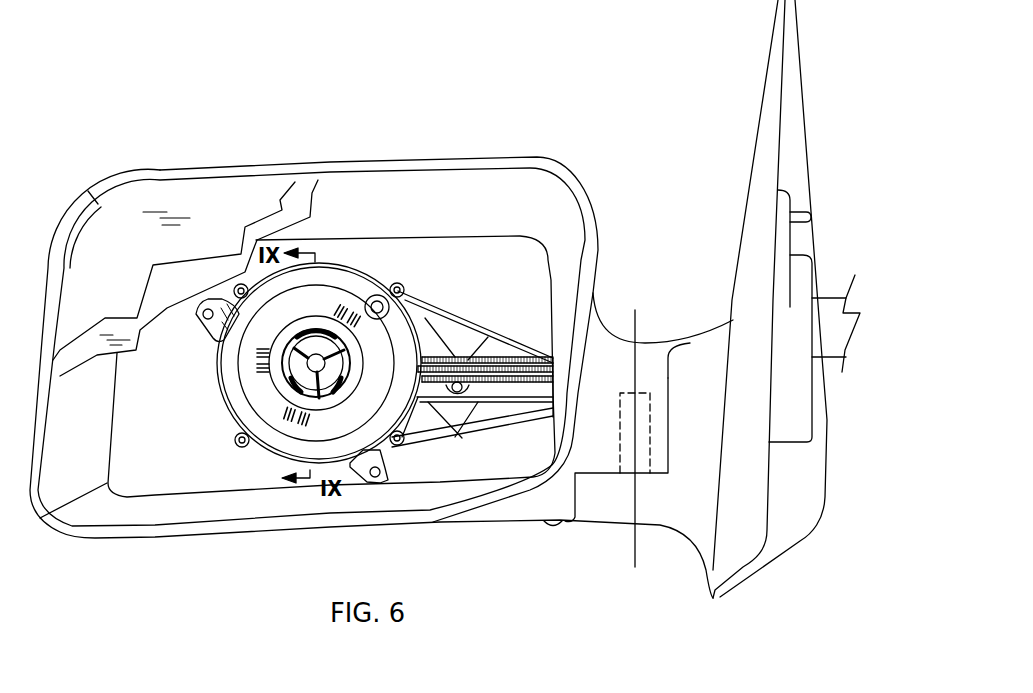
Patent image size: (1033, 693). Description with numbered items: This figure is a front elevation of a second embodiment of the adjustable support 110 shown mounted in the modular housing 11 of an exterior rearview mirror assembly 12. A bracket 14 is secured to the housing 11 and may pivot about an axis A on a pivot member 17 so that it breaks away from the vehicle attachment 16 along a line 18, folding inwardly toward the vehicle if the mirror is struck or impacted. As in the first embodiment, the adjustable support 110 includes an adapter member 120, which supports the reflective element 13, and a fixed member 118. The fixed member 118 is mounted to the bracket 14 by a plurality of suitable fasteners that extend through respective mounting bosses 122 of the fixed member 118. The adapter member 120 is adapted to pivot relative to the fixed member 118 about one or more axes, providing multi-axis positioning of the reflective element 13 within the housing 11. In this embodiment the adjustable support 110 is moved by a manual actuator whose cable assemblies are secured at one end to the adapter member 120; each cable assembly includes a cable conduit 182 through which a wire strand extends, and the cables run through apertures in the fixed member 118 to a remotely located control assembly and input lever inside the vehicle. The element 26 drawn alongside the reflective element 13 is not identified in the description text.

The exterior rearview mirror assembly 12 is at (204, 153).
The modular housing 11 is at (460, 157).
The reflective element 13 is at (268, 187).
The mirror glass carrier 26 is at (303, 192).
The adjustable support 110 is at (445, 283).
The adapter member 120 is at (353, 265).
The fixed member 118 is at (197, 322).
The mounting bosses 122 is at (389, 468).
The cable conduit 182 is at (482, 358).
The bracket 14 is at (495, 423).
The line 18 is at (669, 378).
The pivot member 17 is at (620, 450).
The axis A is at (635, 550).
The vehicle attachment 16 is at (758, 105).